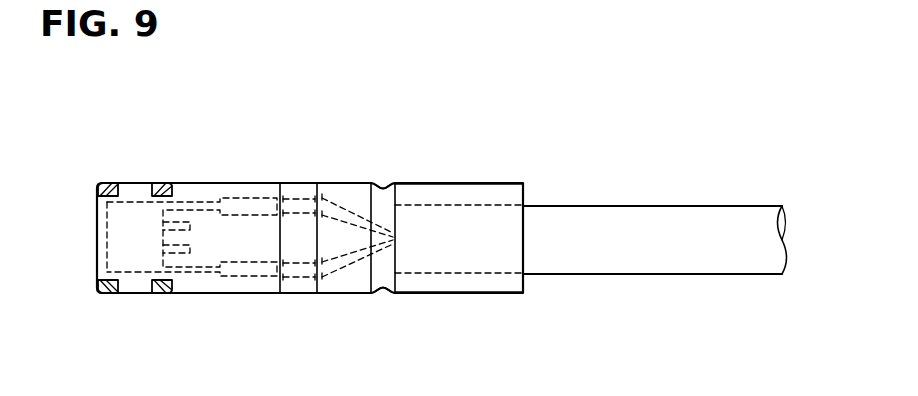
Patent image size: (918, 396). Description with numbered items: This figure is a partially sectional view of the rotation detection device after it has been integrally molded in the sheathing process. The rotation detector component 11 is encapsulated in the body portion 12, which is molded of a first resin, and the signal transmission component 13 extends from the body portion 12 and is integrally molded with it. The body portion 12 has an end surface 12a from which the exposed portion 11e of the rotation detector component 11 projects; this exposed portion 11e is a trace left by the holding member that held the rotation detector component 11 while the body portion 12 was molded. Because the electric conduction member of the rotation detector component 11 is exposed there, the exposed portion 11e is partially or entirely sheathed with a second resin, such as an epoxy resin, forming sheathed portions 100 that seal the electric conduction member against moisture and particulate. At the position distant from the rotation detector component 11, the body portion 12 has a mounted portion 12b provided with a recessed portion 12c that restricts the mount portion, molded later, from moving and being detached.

The rotation detector component 11 is at (118, 232).
The exposed portion 11e is at (158, 183).
The body portion 12 is at (298, 176).
The end surface 12a is at (168, 181).
The mounted portion 12b is at (523, 170).
The recessed portion 12c is at (382, 293).
The signal transmission component 13 is at (597, 199).
The sheathed portion 100 is at (104, 183).